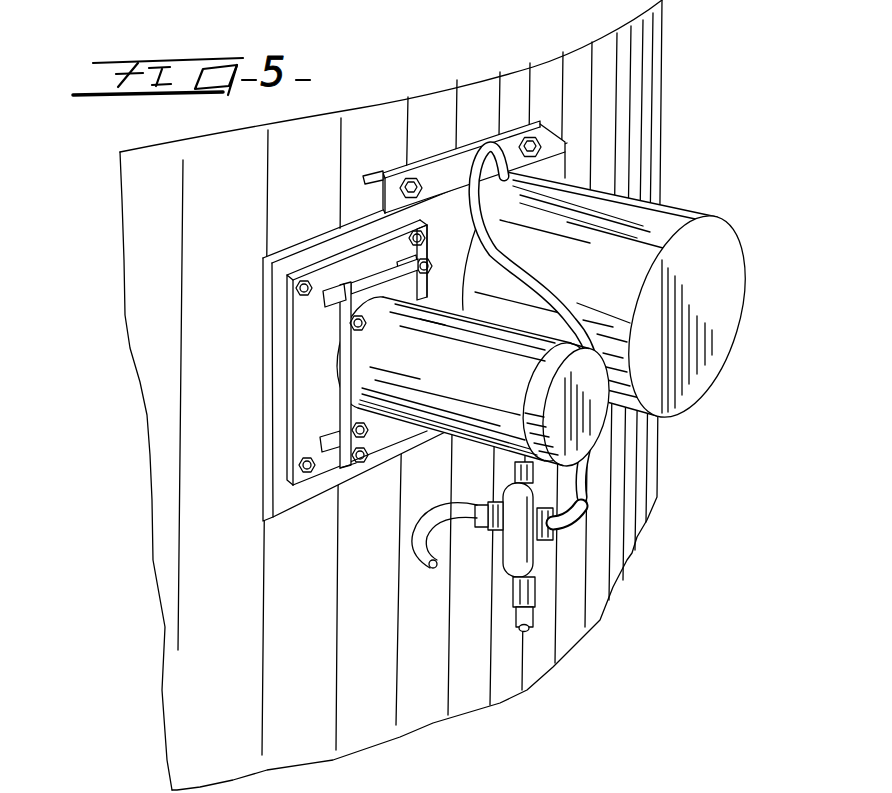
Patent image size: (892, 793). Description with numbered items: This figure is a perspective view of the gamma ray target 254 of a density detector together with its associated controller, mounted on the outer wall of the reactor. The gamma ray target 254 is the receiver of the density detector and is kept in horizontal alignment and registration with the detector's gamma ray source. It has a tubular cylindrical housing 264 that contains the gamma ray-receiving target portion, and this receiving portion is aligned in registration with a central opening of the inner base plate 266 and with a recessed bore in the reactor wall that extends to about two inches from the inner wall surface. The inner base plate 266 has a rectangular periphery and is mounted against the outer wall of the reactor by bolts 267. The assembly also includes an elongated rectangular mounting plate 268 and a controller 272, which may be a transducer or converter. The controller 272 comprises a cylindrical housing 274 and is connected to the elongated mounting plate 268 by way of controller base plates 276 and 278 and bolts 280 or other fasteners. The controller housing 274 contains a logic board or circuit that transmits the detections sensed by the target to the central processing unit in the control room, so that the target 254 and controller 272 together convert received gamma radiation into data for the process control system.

The gamma ray target 254 is at (677, 205).
The tubular cylindrical housing 264 is at (711, 347).
The inner base plate 266 is at (420, 157).
The bolts 267 is at (380, 171).
The elongated rectangular mounting plate 268 is at (268, 316).
The controller 272 is at (447, 432).
The cylindrical housing 274 is at (575, 430).
The controller base plate 276 is at (290, 428).
The controller base plate 278 is at (341, 364).
The bolts 280 is at (333, 453).